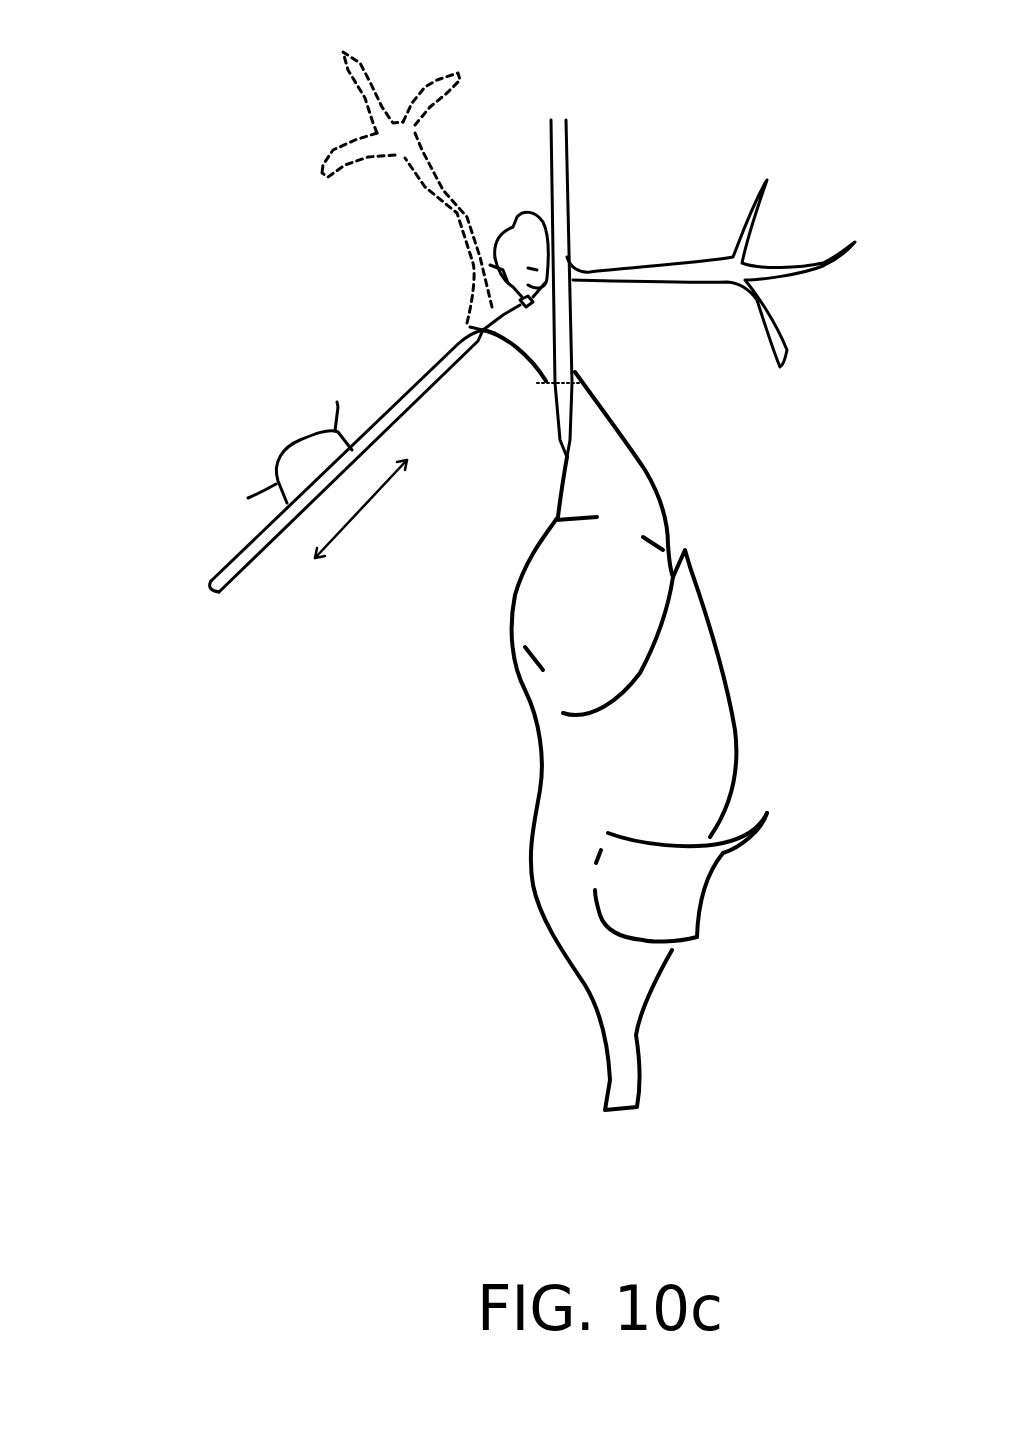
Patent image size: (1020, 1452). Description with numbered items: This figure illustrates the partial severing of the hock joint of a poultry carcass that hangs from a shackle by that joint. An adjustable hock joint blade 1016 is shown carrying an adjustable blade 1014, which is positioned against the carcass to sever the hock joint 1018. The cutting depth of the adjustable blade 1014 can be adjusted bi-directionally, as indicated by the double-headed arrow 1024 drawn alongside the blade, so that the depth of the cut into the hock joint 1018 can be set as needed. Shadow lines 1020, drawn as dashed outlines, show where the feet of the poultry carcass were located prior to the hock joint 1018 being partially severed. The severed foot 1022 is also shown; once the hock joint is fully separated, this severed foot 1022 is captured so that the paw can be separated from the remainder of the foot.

The adjustable blade 1014 is at (245, 575).
The adjustable hock joint blade 1016 is at (275, 477).
The hock joint 1018 is at (483, 336).
The shadow lines 1020 is at (453, 232).
The severed foot 1022 is at (635, 265).
The arrow 1024 is at (378, 500).